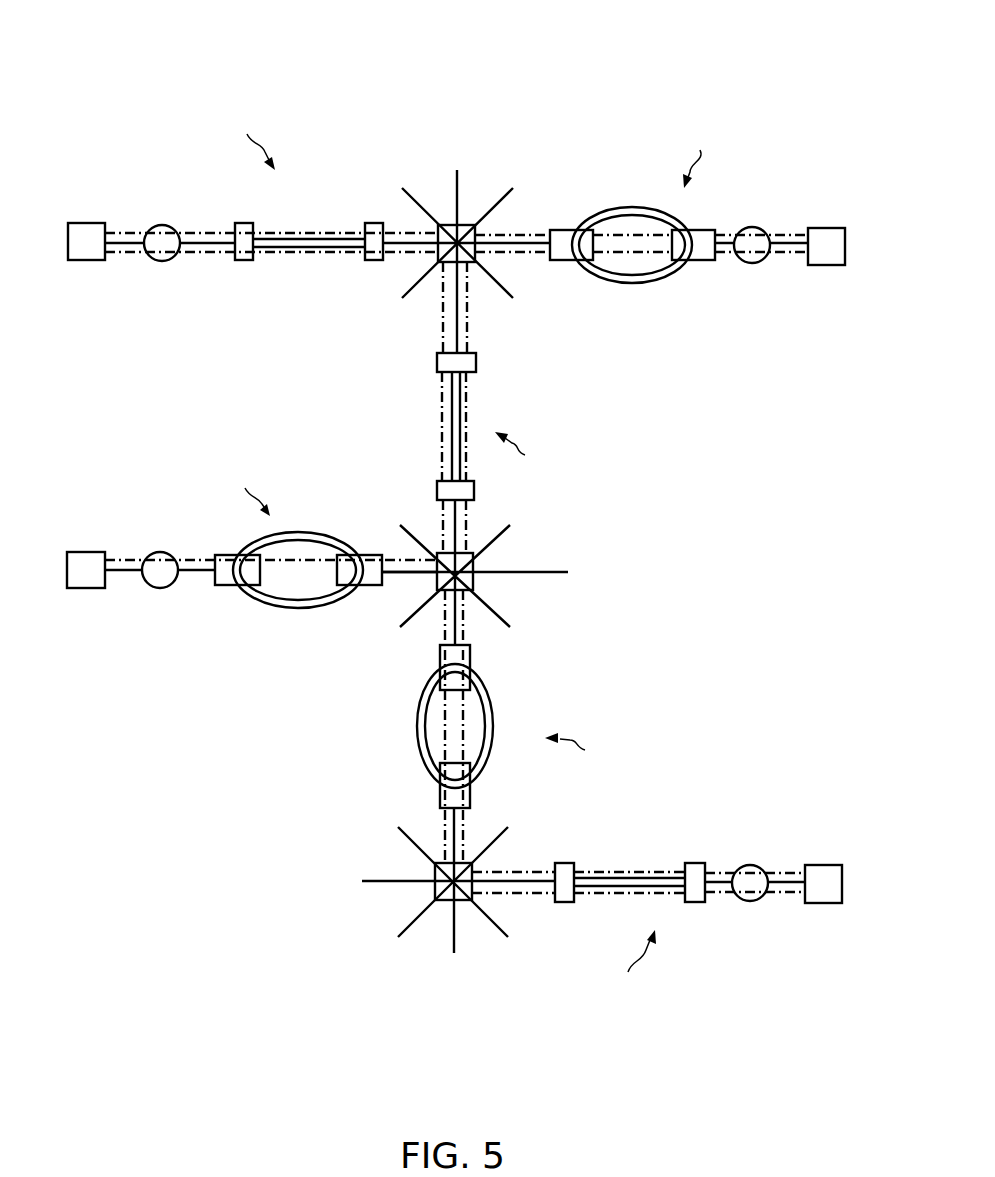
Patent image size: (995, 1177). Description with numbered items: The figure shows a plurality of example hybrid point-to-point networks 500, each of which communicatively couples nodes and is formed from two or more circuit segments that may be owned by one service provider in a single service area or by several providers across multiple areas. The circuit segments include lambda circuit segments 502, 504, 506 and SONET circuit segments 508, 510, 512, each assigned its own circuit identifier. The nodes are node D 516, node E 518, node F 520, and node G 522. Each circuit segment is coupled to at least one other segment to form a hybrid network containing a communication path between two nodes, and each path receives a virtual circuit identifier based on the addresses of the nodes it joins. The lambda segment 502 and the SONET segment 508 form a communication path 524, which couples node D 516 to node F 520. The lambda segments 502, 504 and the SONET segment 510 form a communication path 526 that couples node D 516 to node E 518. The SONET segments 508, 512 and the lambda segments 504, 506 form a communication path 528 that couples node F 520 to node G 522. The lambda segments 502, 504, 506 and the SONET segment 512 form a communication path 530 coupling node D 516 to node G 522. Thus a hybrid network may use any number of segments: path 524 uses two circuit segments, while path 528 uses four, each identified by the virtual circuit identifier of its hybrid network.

The hybrid point-to-point networks 500 is at (130, 70).
The lambda circuit segment 502 is at (247, 223).
The lambda circuit segment 504 is at (472, 352).
The lambda circuit segment 506 is at (690, 902).
The SONET circuit segment 508 is at (630, 282).
The SONET circuit segment 510 is at (288, 608).
The SONET circuit segment 512 is at (492, 720).
The node D 516 is at (100, 222).
The node E 518 is at (60, 543).
The node F 520 is at (832, 228).
The node G 522 is at (828, 865).
The communication path 524 is at (782, 233).
The communication path 526 is at (441, 308).
The communication path 528 is at (498, 873).
The communication path 530 is at (140, 583).